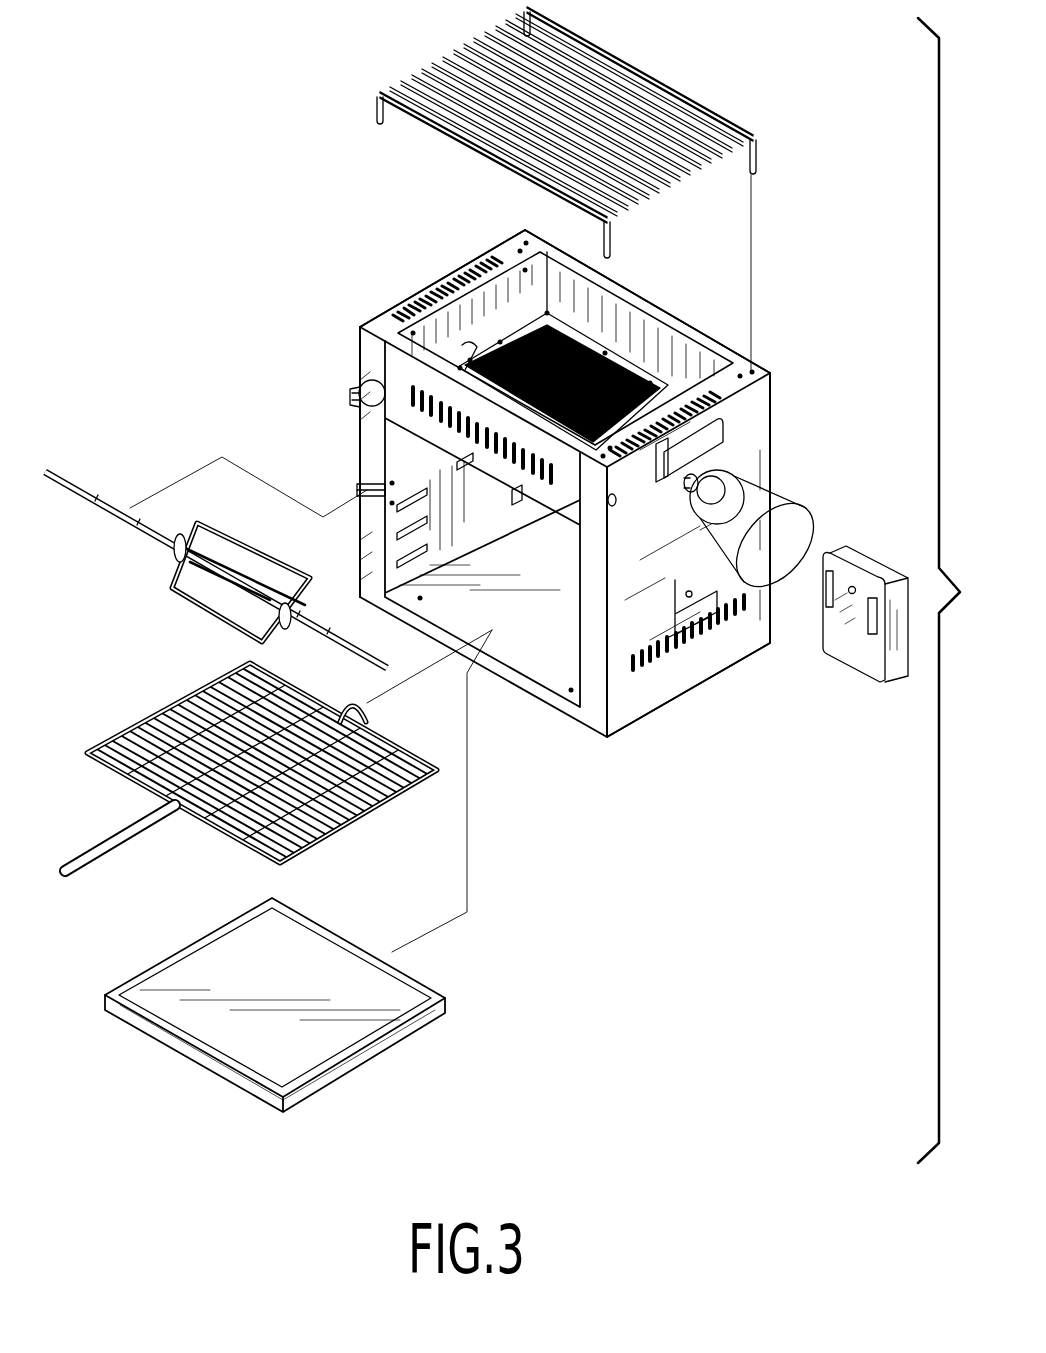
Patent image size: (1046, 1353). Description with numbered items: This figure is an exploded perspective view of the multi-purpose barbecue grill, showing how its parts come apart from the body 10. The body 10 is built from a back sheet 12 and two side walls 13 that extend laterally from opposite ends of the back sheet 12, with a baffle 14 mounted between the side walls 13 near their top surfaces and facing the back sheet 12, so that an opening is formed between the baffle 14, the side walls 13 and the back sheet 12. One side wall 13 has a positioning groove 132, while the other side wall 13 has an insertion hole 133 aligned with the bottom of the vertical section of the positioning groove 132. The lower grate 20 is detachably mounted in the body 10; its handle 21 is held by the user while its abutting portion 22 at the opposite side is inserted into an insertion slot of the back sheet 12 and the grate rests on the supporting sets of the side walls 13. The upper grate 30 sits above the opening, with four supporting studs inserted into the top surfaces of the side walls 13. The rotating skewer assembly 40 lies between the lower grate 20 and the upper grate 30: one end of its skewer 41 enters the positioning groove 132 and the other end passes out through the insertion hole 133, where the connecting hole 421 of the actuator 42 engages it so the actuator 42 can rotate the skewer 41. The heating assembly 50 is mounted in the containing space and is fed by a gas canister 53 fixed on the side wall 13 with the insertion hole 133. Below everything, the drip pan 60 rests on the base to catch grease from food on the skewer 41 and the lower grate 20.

The body 10 is at (569, 404).
The back sheet 12 is at (670, 296).
The side walls 13 is at (346, 341).
The baffle 14 is at (398, 414).
The positioning groove 132 is at (367, 491).
The insertion hole 133 is at (688, 590).
The lower grate 20 is at (253, 768).
The handle 21 is at (99, 879).
The abutting portion 22 is at (368, 710).
The upper grate 30 is at (669, 50).
The rotating skewer assembly 40 is at (153, 463).
The skewer 41 is at (81, 461).
The actuator 42 is at (862, 631).
The connecting hole 421 is at (854, 586).
The heating assembly 50 is at (501, 316).
The gas canister 53 is at (801, 489).
The drip pan 60 is at (211, 1093).